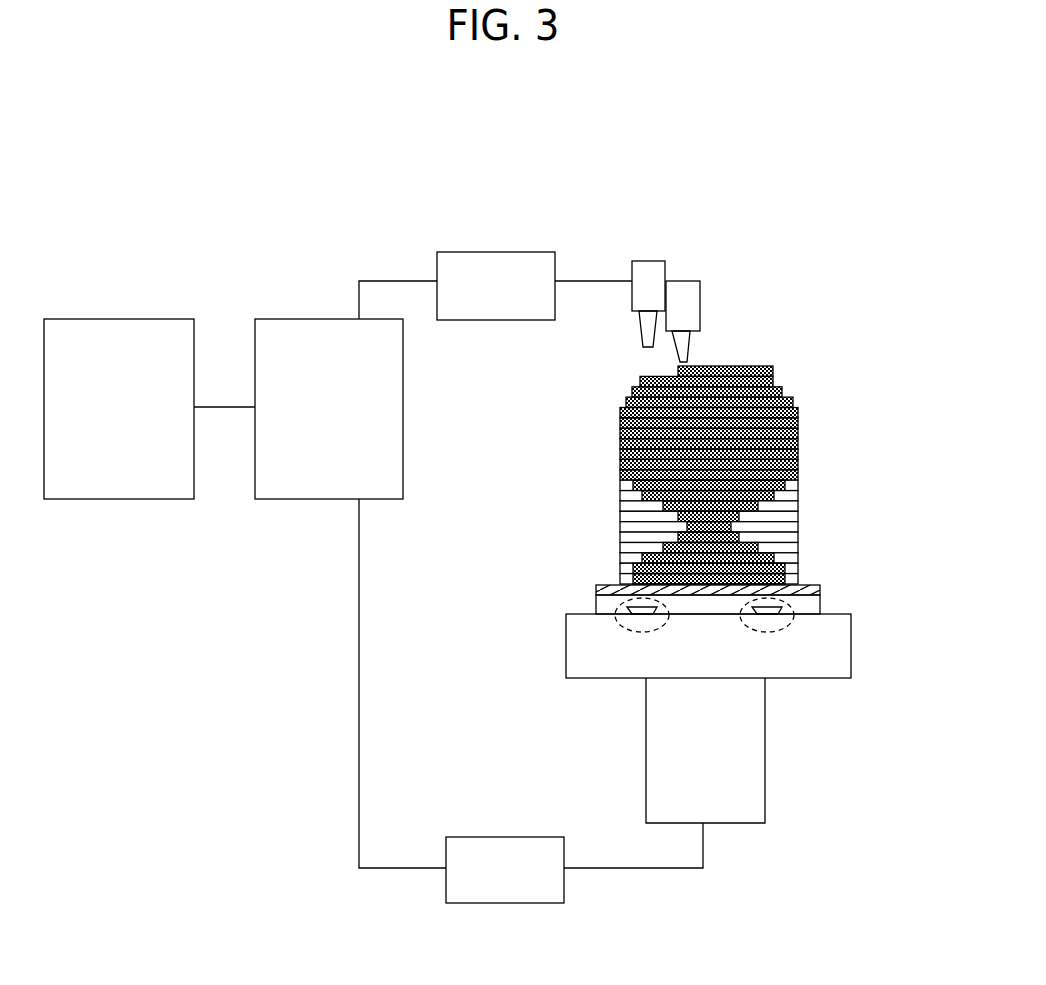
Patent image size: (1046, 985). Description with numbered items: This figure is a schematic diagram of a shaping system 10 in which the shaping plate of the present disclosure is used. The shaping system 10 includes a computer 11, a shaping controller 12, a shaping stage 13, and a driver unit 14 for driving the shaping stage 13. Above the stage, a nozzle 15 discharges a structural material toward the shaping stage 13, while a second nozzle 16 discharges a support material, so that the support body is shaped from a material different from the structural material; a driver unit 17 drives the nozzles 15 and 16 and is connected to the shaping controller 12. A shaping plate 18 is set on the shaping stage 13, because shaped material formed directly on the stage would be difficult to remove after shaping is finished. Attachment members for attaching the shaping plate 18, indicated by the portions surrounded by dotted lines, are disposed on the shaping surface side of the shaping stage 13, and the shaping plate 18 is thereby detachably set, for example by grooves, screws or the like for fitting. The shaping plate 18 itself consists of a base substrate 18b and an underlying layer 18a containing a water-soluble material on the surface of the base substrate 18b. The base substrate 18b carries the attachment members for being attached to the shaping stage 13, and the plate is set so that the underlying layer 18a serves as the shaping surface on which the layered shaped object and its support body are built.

The shaping system 10 is at (577, 125).
The computer 11 is at (117, 318).
The shaping controller 12 is at (297, 318).
The shaping stage 13 is at (852, 653).
The driver unit 14 is at (500, 836).
The nozzle 15 is at (682, 281).
The nozzle 16 is at (647, 260).
The driver unit 17 is at (493, 251).
The shaping plate 18 is at (781, 576).
The underlying layer 18a is at (820, 590).
The base substrate 18b is at (820, 602).